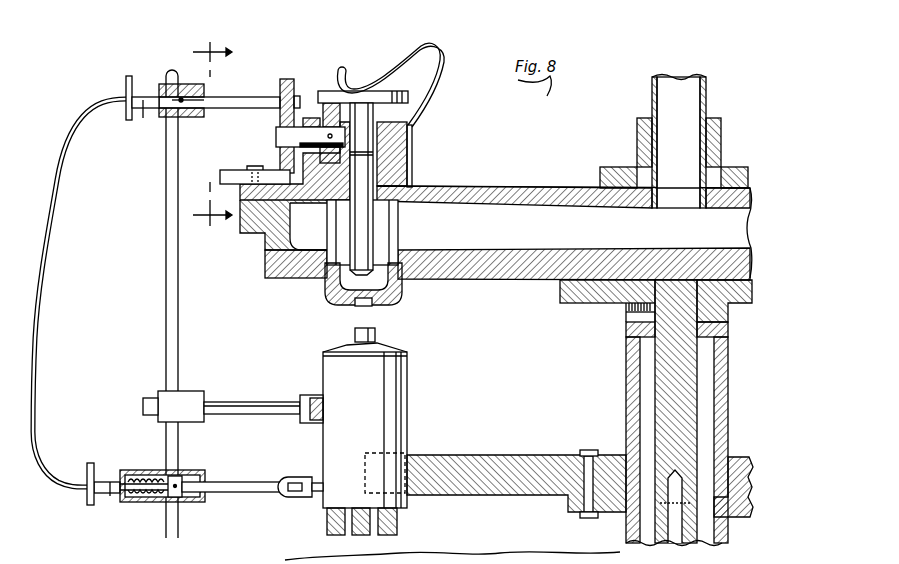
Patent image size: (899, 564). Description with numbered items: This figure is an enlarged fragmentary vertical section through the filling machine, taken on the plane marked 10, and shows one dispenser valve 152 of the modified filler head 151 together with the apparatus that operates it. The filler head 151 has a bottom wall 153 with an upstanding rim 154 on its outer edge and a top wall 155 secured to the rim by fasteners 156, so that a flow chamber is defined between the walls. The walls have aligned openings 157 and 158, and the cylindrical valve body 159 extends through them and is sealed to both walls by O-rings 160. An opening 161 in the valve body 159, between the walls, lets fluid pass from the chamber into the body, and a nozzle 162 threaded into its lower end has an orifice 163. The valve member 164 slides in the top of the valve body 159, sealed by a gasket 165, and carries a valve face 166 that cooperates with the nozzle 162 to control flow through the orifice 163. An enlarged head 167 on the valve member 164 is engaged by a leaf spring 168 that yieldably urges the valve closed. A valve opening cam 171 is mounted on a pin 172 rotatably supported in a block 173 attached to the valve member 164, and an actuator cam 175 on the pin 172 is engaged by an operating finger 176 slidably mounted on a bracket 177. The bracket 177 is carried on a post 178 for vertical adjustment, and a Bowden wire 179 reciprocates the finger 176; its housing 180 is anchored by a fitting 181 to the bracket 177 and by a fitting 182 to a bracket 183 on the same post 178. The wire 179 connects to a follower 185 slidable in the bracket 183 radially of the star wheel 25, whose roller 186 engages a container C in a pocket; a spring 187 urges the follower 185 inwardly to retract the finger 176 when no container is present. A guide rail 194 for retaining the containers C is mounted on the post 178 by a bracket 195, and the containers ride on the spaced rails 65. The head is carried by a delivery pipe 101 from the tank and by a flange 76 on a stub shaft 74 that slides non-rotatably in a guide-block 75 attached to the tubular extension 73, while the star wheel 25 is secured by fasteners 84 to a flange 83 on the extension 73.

The section plane 10 is at (212, 137).
The star wheel 25 is at (746, 449).
The spaced rails 65 is at (398, 521).
The tubular extension 73 is at (722, 395).
The stub shaft 74 is at (687, 377).
The guide-block 75 is at (708, 331).
The flange 76 is at (595, 293).
The flange 83 is at (570, 497).
The fasteners 84 is at (590, 450).
The delivery pipe 101 is at (658, 122).
The filler head 151 is at (511, 183).
The dispenser valve 152 is at (418, 171).
The bottom wall 153 is at (530, 268).
The rim 154 is at (267, 240).
The top wall 155 is at (547, 187).
The fasteners 156 is at (243, 175).
The opening 157 is at (402, 209).
The opening 158 is at (404, 284).
The valve body 159 is at (385, 250).
The O-rings 160 is at (408, 191).
The opening 161 is at (333, 229).
The nozzle 162 is at (337, 305).
The orifice 163 is at (366, 304).
The valve member 164 is at (370, 225).
The gasket 165 is at (382, 152).
The valve face 166 is at (362, 285).
The enlarged head 167 is at (330, 90).
The leaf spring 168 is at (420, 48).
The valve opening cam 171 is at (323, 110).
The pin 172 is at (277, 135).
The block 173 is at (293, 163).
The actuator cam 175 is at (281, 87).
The operating finger 176 is at (223, 104).
The bracket 177 is at (170, 78).
The post 178 is at (174, 311).
The Bowden wire 179 is at (143, 111).
The Bowden wire housing 180 is at (50, 440).
The fitting 181 is at (128, 122).
The fitting 182 is at (95, 463).
The bracket 183 is at (190, 470).
The follower 185 is at (236, 490).
The roller 186 is at (300, 478).
The spring 187 is at (146, 506).
The guide rail 194 is at (315, 400).
The bracket 195 is at (233, 400).
The container C is at (392, 406).